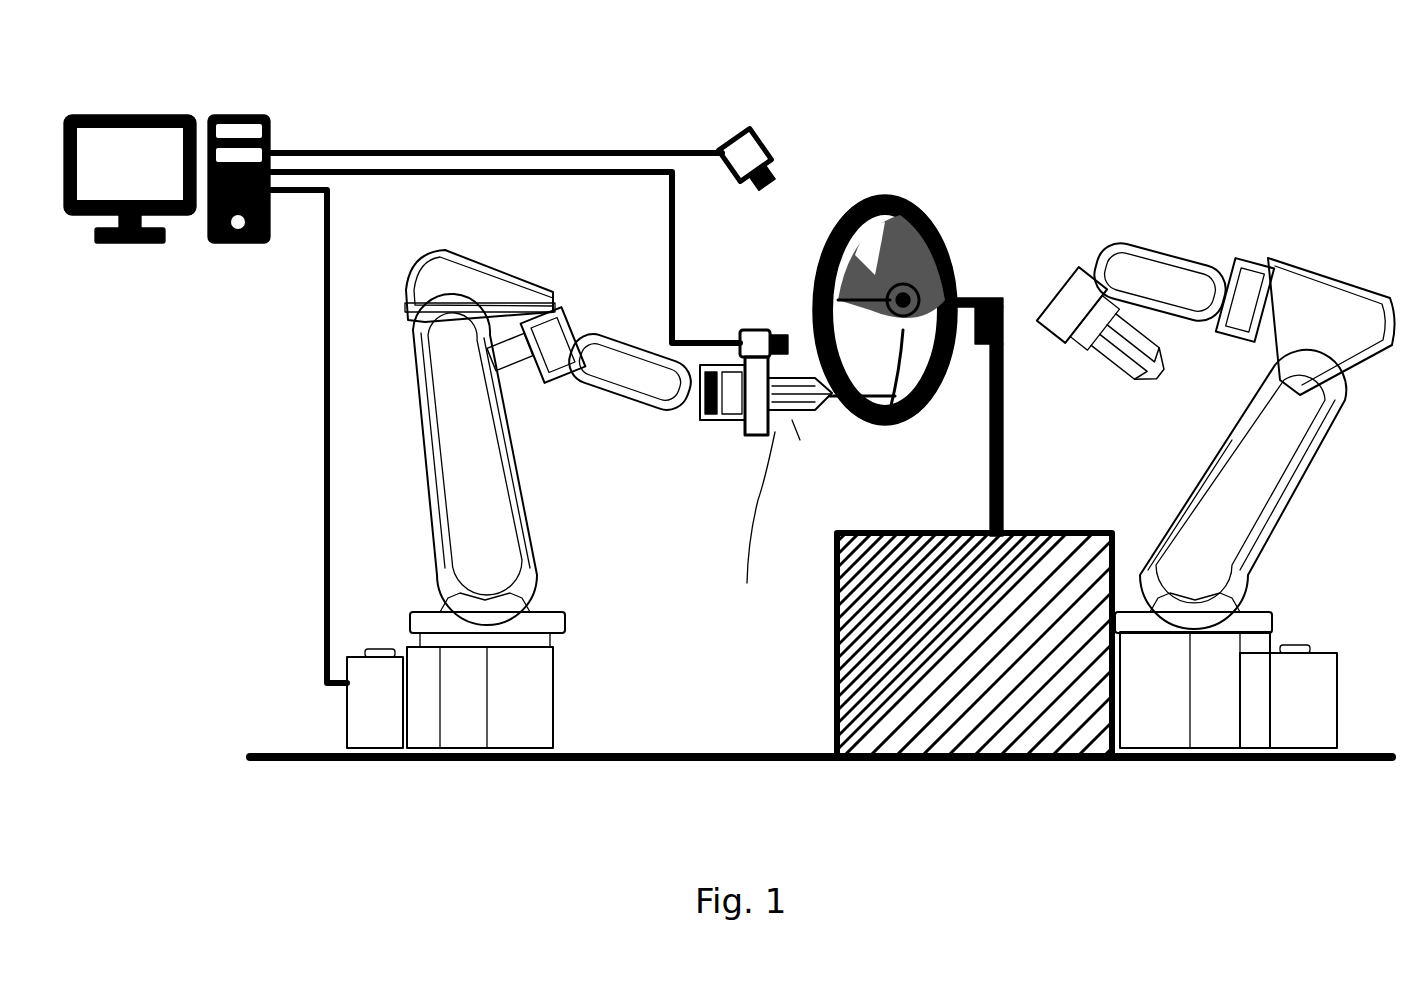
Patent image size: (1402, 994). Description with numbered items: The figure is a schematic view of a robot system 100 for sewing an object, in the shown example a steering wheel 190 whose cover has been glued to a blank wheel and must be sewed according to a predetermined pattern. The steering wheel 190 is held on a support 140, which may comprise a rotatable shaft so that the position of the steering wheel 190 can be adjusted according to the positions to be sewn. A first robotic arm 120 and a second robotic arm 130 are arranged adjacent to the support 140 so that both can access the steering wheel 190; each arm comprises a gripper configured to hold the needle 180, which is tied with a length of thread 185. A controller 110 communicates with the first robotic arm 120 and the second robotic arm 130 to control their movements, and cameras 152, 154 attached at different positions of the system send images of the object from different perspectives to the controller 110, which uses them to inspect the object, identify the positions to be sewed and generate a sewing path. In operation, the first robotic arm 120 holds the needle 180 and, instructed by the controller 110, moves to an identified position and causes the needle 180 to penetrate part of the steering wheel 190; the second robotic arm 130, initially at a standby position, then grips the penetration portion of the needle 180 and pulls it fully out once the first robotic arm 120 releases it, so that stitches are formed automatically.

The robot system 100 is at (1160, 120).
The controller 110 is at (217, 98).
The first robotic arm 120 is at (703, 440).
The second robotic arm 130 is at (1128, 342).
The support 140 is at (993, 297).
The camera 152 is at (758, 136).
The camera 154 is at (758, 338).
The needle 180 is at (847, 400).
The thread 185 is at (758, 500).
The steering wheel 190 is at (937, 227).